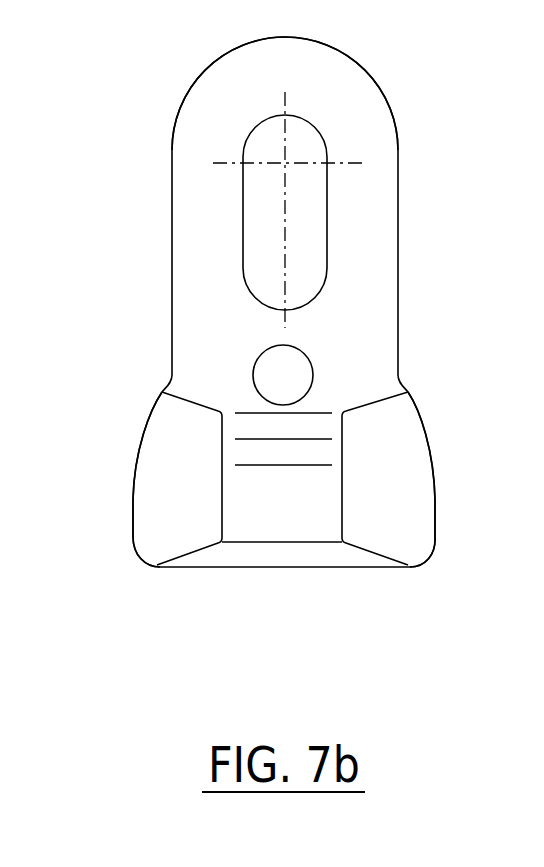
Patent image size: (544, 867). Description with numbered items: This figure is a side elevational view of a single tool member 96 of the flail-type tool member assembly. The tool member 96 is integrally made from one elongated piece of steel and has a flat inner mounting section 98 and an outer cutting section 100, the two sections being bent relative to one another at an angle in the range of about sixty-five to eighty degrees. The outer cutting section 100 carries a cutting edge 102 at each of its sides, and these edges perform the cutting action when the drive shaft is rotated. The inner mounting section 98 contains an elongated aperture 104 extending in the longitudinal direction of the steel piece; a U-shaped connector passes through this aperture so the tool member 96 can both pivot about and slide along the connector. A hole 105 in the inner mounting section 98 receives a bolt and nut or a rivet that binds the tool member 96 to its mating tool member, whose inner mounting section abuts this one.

The tool member 96 is at (172, 344).
The inner mounting section 98 is at (172, 212).
The outer cutting section 100 is at (157, 532).
The cutting edge 102 is at (132, 497).
The elongated aperture 104 is at (308, 261).
The hole 105 is at (313, 366).